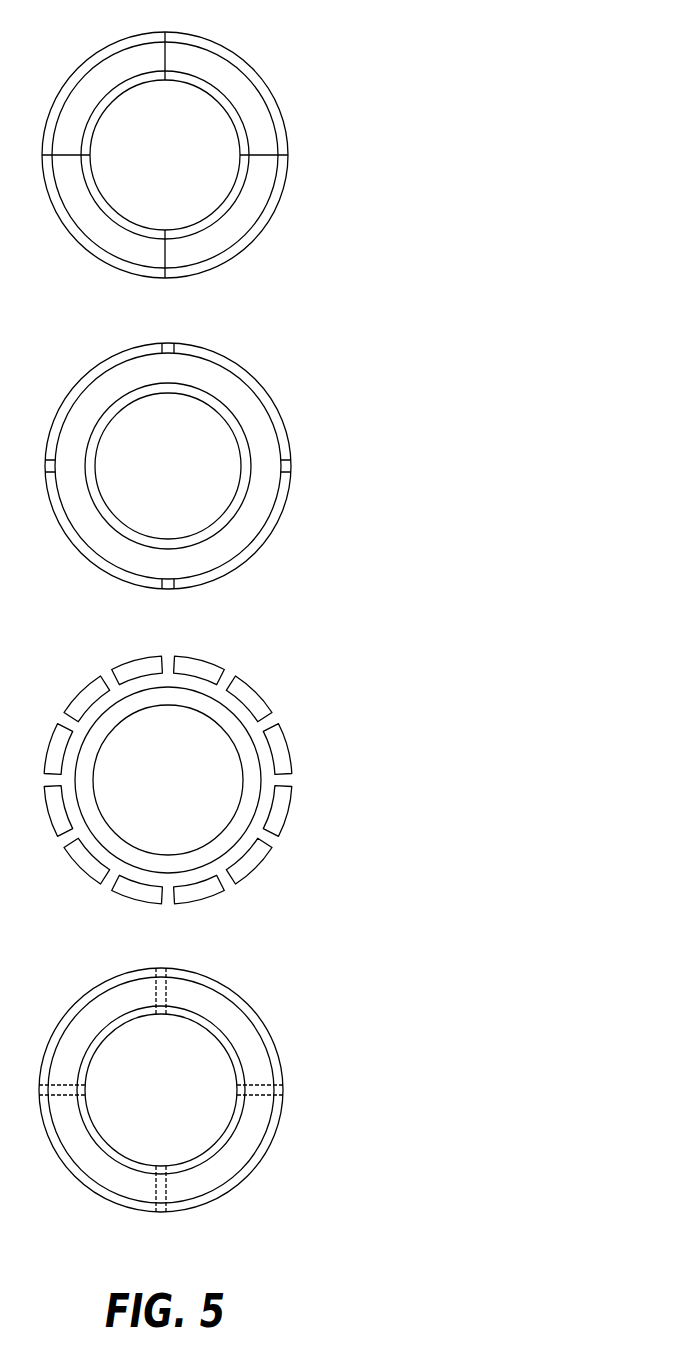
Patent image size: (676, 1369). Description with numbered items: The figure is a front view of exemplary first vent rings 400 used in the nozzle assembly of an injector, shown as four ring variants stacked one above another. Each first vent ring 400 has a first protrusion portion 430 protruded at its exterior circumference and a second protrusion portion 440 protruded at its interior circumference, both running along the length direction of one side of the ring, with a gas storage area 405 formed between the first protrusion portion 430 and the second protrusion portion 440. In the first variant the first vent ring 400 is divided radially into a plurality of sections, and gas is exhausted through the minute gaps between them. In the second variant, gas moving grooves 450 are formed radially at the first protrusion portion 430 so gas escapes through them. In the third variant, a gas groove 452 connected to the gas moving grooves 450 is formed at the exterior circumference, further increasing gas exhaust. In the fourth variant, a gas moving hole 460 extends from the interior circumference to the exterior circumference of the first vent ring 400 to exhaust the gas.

The first vent ring 400 is at (285, 68).
The gas storage area 405 is at (255, 203).
The first protrusion portion 430 is at (258, 230).
The second protrusion portion 440 is at (255, 173).
The gas moving grooves 450 is at (291, 466).
The gas groove 452 is at (292, 778).
The gas moving hole 460 is at (283, 1088).